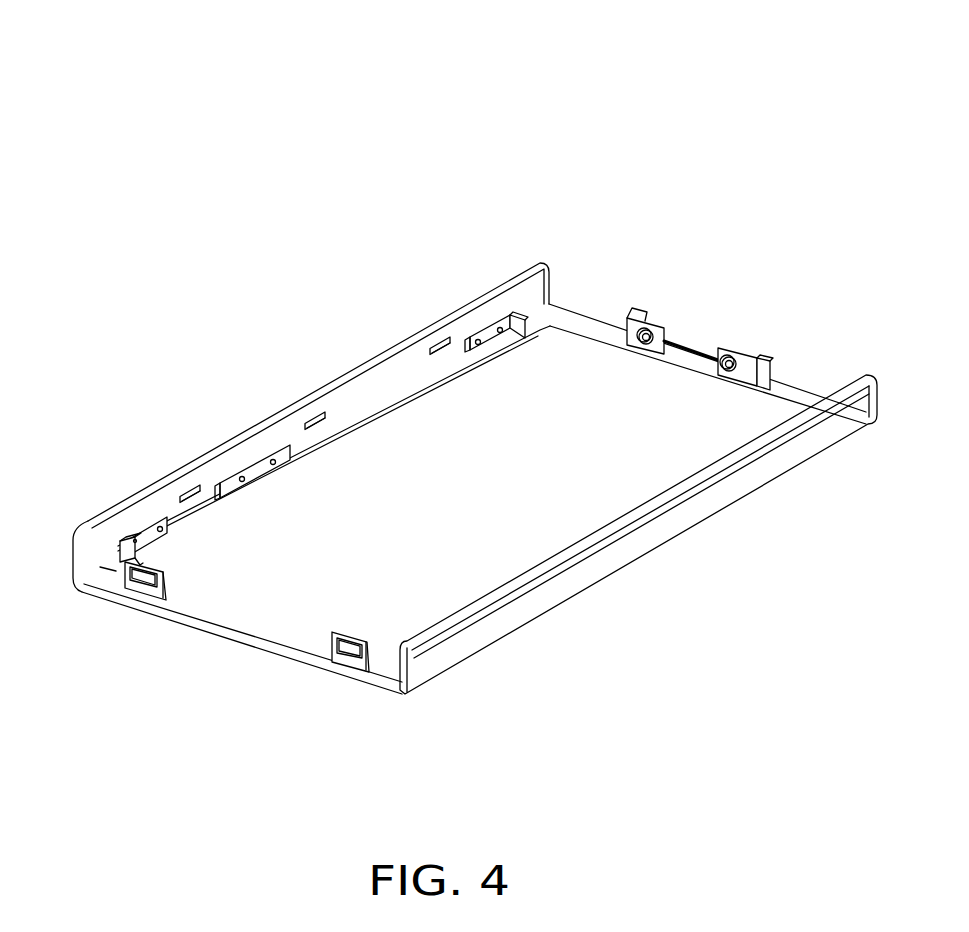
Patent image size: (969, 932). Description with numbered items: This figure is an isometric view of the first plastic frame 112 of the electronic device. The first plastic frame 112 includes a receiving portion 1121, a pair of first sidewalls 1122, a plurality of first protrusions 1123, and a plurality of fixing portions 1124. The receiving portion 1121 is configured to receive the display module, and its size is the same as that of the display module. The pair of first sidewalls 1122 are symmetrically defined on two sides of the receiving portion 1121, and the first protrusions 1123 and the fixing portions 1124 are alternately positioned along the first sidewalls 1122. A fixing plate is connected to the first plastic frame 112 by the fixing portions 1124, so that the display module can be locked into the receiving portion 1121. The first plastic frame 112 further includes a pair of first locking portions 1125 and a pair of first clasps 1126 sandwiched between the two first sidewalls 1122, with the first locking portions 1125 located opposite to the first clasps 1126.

The first plastic frame 112 is at (397, 52).
The receiving portion 1121 is at (665, 452).
The first sidewalls 1122 is at (528, 602).
The first protrusions 1123 is at (446, 340).
The fixing portions 1124 is at (375, 392).
The first locking portions 1125 is at (735, 350).
The first clasps 1126 is at (347, 648).